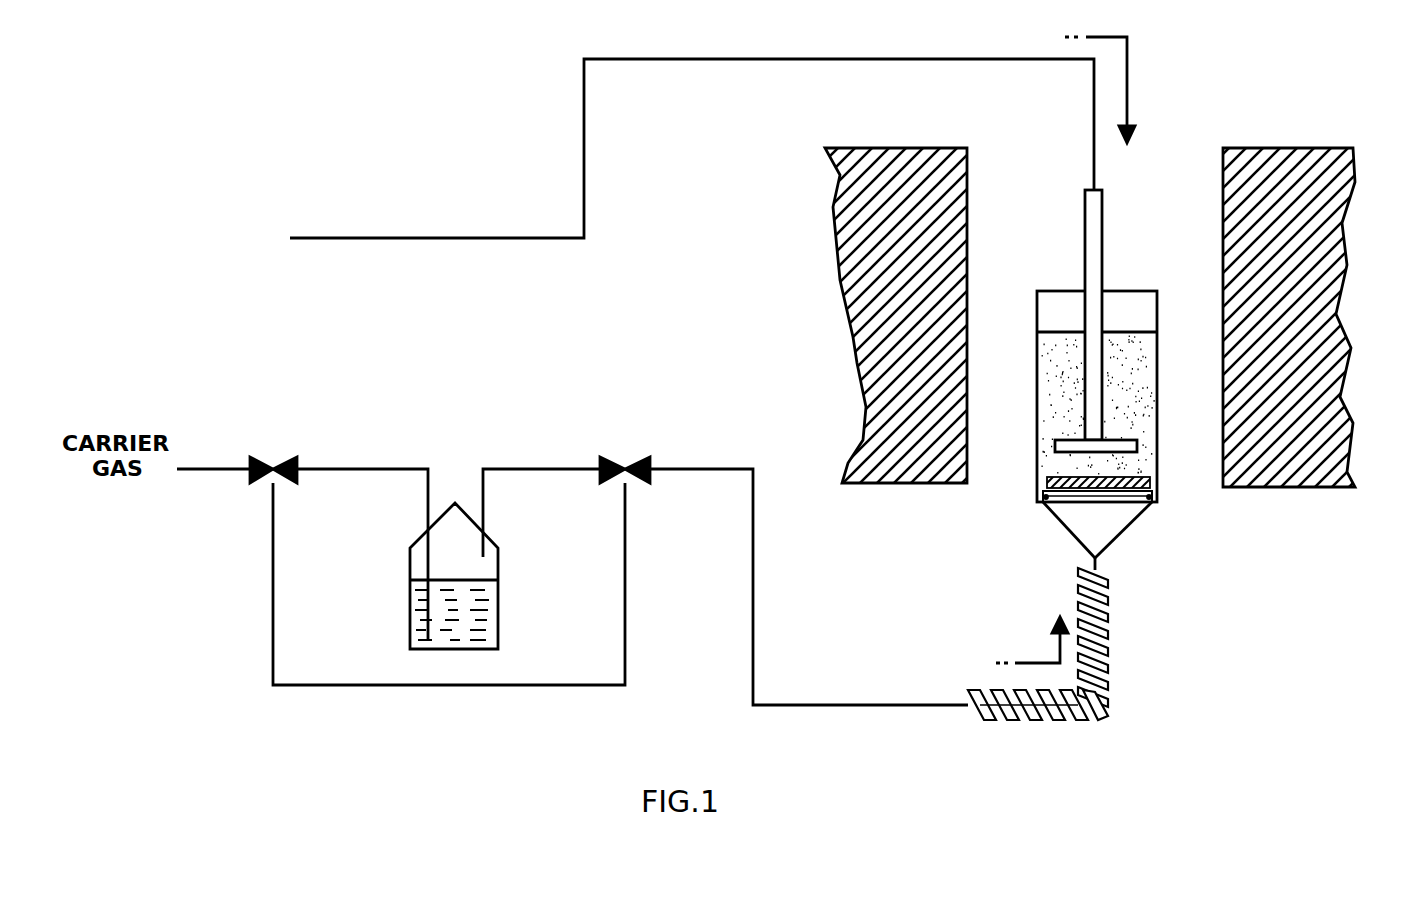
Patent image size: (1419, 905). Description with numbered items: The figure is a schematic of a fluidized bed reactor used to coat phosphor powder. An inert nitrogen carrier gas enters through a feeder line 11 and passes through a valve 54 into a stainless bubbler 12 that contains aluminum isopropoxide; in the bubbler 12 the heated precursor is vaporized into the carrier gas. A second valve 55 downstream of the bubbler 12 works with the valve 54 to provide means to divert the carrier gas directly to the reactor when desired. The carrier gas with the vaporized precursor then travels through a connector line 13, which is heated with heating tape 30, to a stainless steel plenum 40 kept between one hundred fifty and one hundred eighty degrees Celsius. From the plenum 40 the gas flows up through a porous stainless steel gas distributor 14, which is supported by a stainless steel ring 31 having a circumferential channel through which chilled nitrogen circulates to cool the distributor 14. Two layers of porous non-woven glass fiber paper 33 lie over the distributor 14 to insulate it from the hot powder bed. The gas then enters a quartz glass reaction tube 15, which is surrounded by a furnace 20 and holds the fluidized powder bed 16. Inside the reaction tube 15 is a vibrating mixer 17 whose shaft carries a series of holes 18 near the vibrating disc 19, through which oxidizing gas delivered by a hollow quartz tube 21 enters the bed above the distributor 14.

The feeder line 11 is at (373, 467).
The stainless bubbler 12 is at (499, 616).
The connector line 13 is at (560, 467).
The porous stainless steel gas distributor 14 is at (1152, 502).
The quartz glass reaction tube 15 is at (1157, 302).
The vessel wall 16 is at (1037, 366).
The vibrating mixer 17 is at (1104, 237).
The holes 18 is at (1104, 405).
The vibrating disc 19 is at (1138, 447).
The furnace 20 is at (1273, 148).
The hollow quartz tube 21 is at (492, 237).
The heating tape 30 is at (1108, 662).
The stainless steel ring 31 is at (1043, 503).
The porous non-woven glass fiber paper 33 is at (1150, 484).
The stainless steel plenum 40 is at (1118, 538).
The valve 54 is at (276, 459).
The valve 55 is at (627, 459).